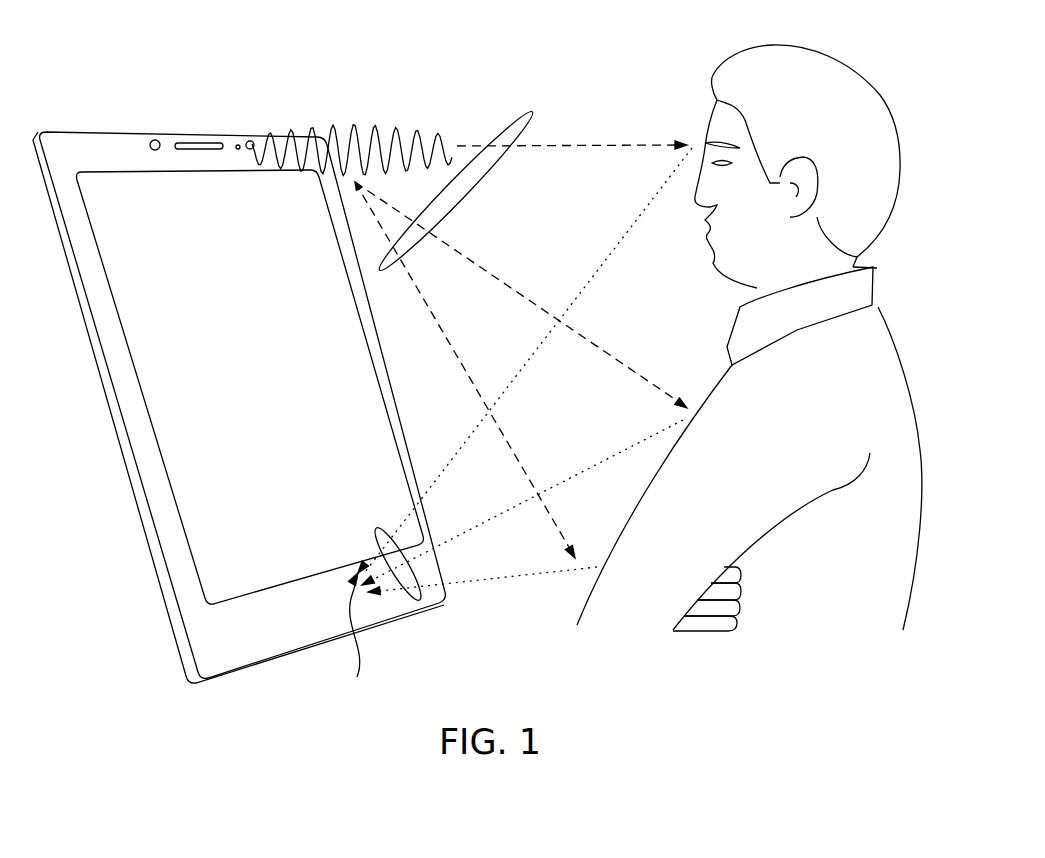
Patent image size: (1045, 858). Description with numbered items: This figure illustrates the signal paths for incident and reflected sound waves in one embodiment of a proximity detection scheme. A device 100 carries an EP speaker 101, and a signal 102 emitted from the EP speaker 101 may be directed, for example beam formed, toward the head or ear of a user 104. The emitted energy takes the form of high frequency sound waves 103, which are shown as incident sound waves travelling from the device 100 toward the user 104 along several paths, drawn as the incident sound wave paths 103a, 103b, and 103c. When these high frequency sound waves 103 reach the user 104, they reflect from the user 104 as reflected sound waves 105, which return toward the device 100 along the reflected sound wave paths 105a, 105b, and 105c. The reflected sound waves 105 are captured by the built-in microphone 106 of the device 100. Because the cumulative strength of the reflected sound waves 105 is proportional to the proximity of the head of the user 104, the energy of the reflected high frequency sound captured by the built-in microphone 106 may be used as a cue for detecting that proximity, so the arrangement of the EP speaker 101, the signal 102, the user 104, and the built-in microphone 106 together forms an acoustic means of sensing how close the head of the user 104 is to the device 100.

The device 100 is at (233, 658).
The EP speaker 101 is at (202, 140).
The signal 102 is at (354, 124).
The incident sound waves 103 is at (515, 110).
The incident sound wave path 103a is at (555, 147).
The incident sound wave path 103b is at (493, 277).
The incident sound wave path 103c is at (438, 323).
The user 104 is at (872, 50).
The reflected sound waves 105 is at (422, 607).
The reflected sound wave path 105a is at (592, 277).
The reflected sound wave path 105b is at (607, 457).
The reflected sound wave path 105c is at (490, 577).
The built-in microphone 106 is at (353, 637).